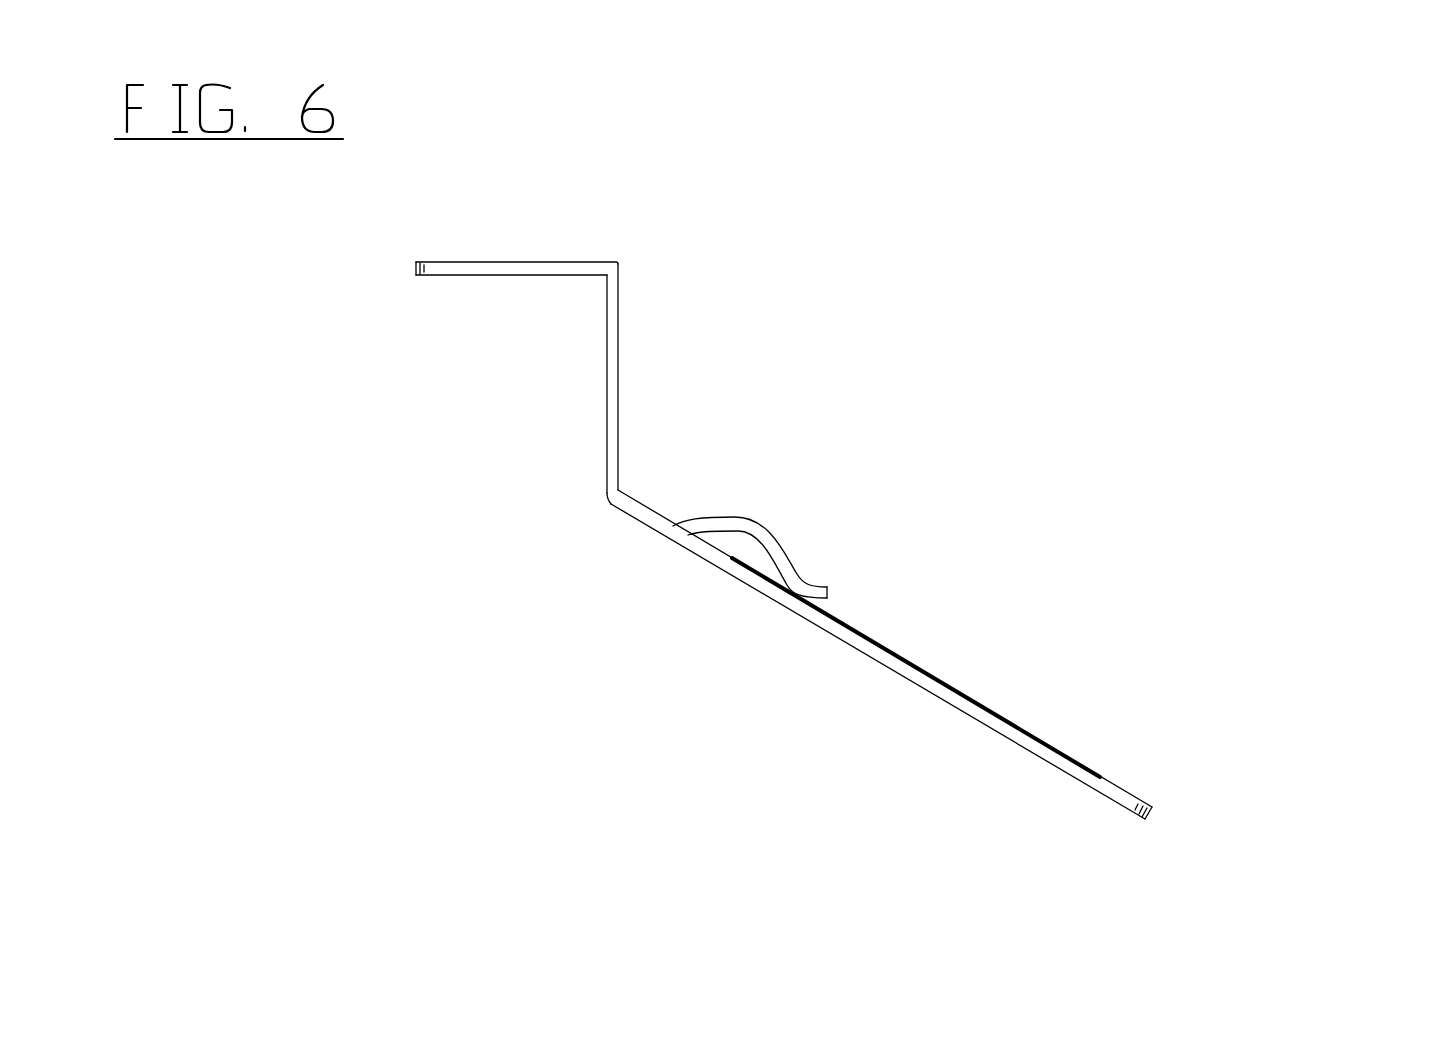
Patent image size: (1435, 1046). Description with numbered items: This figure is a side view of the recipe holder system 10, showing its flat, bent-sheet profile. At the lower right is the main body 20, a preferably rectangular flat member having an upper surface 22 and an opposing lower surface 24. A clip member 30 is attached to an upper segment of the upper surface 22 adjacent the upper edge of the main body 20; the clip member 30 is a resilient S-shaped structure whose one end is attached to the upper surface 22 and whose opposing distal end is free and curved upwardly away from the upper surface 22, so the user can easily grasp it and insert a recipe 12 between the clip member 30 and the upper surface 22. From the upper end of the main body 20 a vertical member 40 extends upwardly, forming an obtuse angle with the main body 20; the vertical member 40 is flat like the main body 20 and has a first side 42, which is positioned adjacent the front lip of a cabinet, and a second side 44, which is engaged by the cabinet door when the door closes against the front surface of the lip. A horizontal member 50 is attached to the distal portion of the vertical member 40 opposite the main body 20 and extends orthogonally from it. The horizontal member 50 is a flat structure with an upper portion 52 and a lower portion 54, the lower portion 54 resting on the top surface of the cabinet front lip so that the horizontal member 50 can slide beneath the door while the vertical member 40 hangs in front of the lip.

The recipe holder system 10 is at (1125, 252).
The recipe 12 is at (1014, 698).
The main body 20 is at (1085, 790).
The upper surface 22 is at (1128, 792).
The lower surface 24 is at (940, 697).
The clip member 30 is at (763, 528).
The vertical member 40 is at (607, 421).
The first side 42 is at (605, 423).
The second side 44 is at (620, 378).
The horizontal member 50 is at (509, 282).
The upper portion 52 is at (575, 262).
The lower portion 54 is at (512, 276).